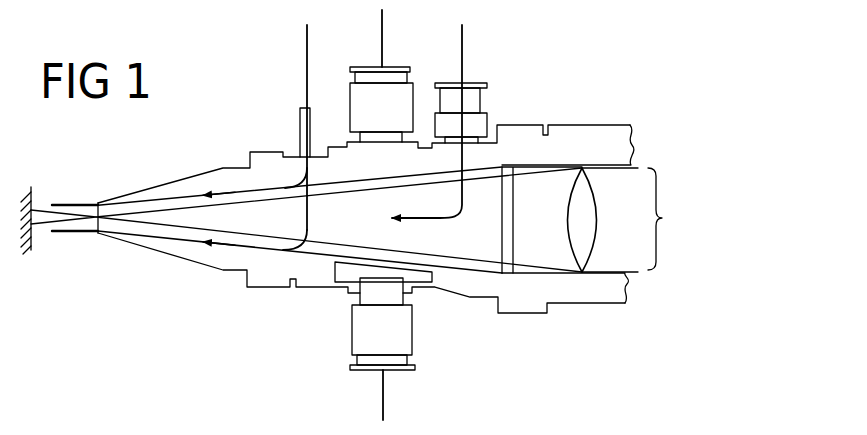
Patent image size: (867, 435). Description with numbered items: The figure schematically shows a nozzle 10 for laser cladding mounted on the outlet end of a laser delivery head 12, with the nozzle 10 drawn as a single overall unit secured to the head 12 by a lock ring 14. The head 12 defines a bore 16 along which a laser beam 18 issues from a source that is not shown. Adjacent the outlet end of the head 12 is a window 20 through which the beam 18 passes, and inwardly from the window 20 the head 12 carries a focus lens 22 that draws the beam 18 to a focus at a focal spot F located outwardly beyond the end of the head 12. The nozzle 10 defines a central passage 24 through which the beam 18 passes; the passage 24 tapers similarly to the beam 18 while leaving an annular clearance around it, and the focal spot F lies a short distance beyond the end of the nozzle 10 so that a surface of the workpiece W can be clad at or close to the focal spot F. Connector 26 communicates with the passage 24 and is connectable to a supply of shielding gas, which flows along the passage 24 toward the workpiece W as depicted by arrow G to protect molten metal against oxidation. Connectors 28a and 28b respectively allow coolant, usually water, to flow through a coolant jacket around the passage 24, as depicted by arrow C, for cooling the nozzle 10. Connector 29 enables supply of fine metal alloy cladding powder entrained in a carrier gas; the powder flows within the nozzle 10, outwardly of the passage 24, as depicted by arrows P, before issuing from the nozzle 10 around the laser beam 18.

The nozzle 10 is at (232, 306).
The laser delivery head 12 is at (583, 140).
The lock ring 14 is at (523, 310).
The bore 16 is at (603, 268).
The laser beam 18 is at (677, 219).
The window 20 is at (508, 230).
The focus lens 22 is at (583, 200).
The central passage 24 is at (312, 238).
The connector 26 is at (473, 100).
The connector 28a is at (380, 118).
The connector 28b is at (370, 327).
The connector 29 is at (300, 126).
The arrows P is at (307, 46).
The arrow C is at (382, 42).
The arrow G is at (462, 45).
The focal spot F is at (96, 215).
The workpiece W is at (31, 250).